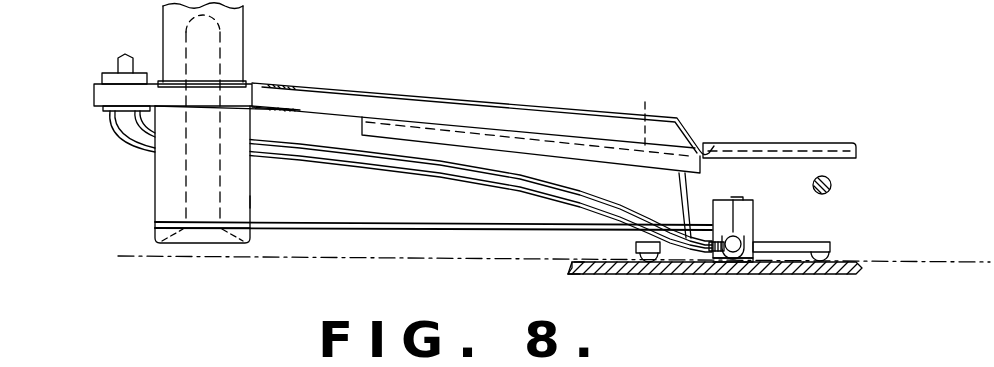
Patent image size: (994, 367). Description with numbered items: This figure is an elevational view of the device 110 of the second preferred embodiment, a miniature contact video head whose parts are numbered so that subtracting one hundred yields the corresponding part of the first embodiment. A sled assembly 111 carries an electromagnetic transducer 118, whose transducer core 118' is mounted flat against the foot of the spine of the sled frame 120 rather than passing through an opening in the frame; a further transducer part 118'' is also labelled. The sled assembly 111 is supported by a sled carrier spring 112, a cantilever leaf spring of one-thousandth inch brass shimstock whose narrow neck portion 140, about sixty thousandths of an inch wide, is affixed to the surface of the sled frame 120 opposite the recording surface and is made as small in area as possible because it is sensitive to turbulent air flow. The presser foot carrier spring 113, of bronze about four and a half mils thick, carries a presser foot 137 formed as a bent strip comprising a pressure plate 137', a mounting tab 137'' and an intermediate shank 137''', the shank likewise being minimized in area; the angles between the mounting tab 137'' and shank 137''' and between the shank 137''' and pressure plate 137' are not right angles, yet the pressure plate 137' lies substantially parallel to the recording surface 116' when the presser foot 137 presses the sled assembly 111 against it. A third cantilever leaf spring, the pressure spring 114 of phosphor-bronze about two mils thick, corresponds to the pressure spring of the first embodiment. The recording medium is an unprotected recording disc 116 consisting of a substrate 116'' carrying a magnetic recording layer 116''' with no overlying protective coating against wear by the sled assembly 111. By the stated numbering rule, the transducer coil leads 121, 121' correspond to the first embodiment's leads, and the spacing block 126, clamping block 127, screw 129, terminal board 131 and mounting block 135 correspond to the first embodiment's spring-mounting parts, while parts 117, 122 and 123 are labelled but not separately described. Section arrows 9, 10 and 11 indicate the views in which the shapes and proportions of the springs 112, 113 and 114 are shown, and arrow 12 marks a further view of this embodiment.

The drill assembly 110 is at (447, 43).
The sled assembly 111 is at (780, 211).
The sled carrier spring 112 is at (426, 229).
The presser foot carrier spring 113 is at (597, 168).
The pressure spring 114 is at (487, 96).
The unprotected recording disc 116 is at (593, 296).
The recording surface 116' is at (566, 245).
The substrate 116'' is at (553, 297).
The magnetic recording layer 116''' is at (534, 285).
The screw 117 is at (831, 186).
The transducer 118 is at (756, 217).
The transducer core 118' is at (752, 202).
The clamp block base 118'' is at (743, 279).
The sled frame 120 is at (796, 268).
The lower cable 121 is at (411, 181).
The upper cable 121' is at (413, 178).
The roller block 122 is at (650, 256).
The roller 123 is at (830, 254).
The post lower portion 126 is at (252, 203).
The post foot 127 is at (153, 248).
The post bore 129 is at (214, 32).
The pivot bar 131 is at (246, 97).
The post 135 is at (240, 58).
The presser foot 137 is at (664, 205).
The pressure plate 137' is at (791, 237).
The mounting tab 137'' is at (633, 114).
The shank 137''' is at (778, 150).
The narrow neck portion 140 is at (731, 254).
The section line 9 is at (126, 216).
The section line 10 is at (52, 112).
The section line 11 is at (62, 84).
The sled carrier spring 12 is at (856, 66).